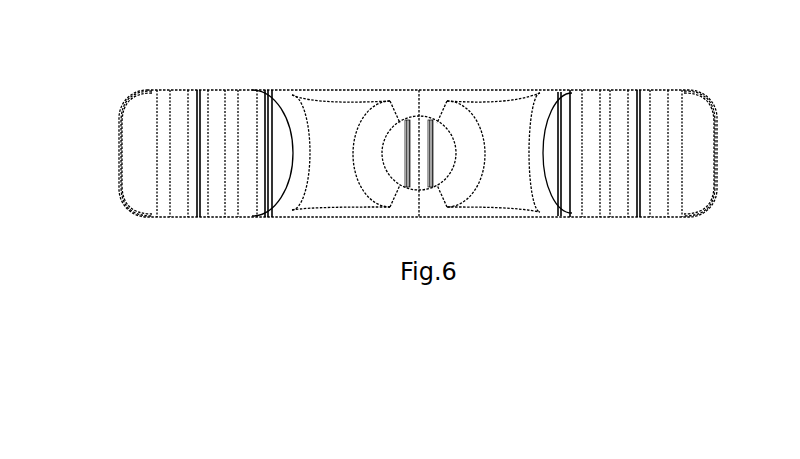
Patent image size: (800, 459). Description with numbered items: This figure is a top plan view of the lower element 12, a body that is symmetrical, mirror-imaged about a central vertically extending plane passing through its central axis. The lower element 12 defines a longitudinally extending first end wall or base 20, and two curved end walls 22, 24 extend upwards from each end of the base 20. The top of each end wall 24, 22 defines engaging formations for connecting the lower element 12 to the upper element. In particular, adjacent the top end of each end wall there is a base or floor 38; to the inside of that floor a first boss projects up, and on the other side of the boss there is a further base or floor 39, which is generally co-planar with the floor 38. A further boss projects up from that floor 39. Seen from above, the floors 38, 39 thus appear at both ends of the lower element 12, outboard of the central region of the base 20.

The lower element 12 is at (434, 184).
The first end wall or base 20 is at (350, 215).
The curved end wall 22 is at (716, 150).
The curved end wall 24 is at (117, 140).
The base or floor 38 is at (141, 110).
The further base or floor 39 is at (215, 109).